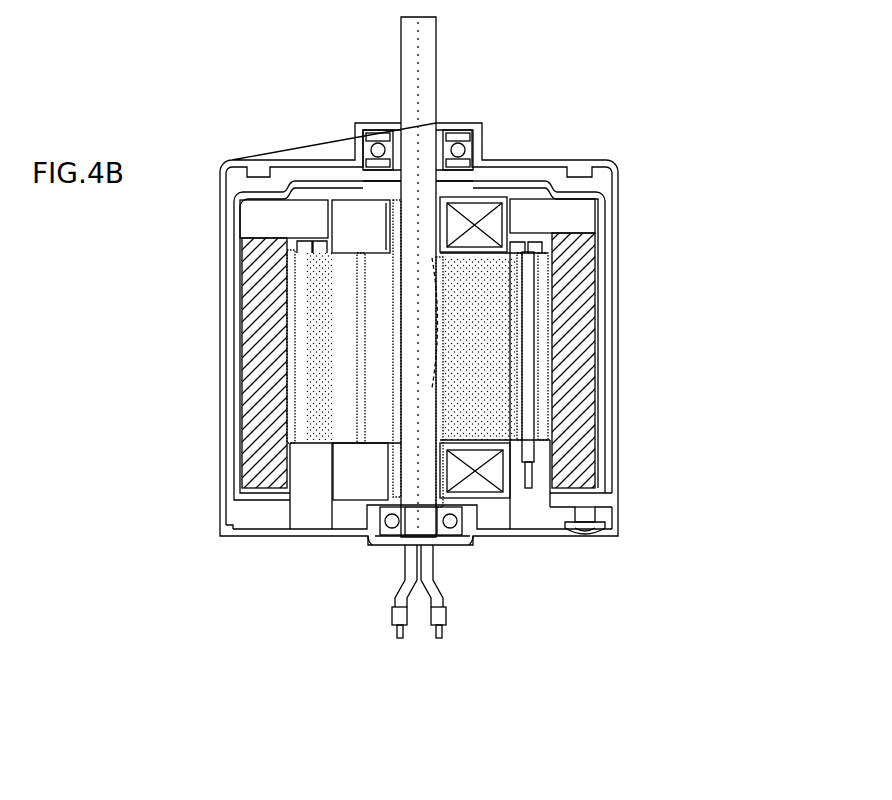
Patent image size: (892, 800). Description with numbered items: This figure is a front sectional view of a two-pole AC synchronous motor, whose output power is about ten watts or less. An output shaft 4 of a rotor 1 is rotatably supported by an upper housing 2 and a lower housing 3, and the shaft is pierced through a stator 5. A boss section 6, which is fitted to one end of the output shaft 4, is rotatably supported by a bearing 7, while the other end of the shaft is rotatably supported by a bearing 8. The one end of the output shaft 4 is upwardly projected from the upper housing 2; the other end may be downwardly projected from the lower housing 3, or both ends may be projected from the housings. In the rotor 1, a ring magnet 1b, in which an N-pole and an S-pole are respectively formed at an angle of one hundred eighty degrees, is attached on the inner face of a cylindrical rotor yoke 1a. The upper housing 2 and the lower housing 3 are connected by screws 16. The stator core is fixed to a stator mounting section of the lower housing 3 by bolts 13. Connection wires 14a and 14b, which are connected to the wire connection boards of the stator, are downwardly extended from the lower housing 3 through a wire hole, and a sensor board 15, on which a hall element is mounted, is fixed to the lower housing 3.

The rotor 1 is at (236, 188).
The rotor yoke 1a is at (602, 205).
The ring magnet 1b is at (588, 297).
The upper housing 2 is at (546, 160).
The lower housing 3 is at (528, 522).
The output shaft 4 is at (430, 40).
The stator 5 is at (311, 233).
The boss section 6 is at (393, 128).
The bearing 7 is at (472, 136).
The bearing 8 is at (466, 542).
The bolt 13 is at (535, 240).
The connection wire 14a is at (399, 610).
The connection wire 14b is at (447, 612).
The sensor board 15 is at (615, 503).
The screw 16 is at (596, 536).